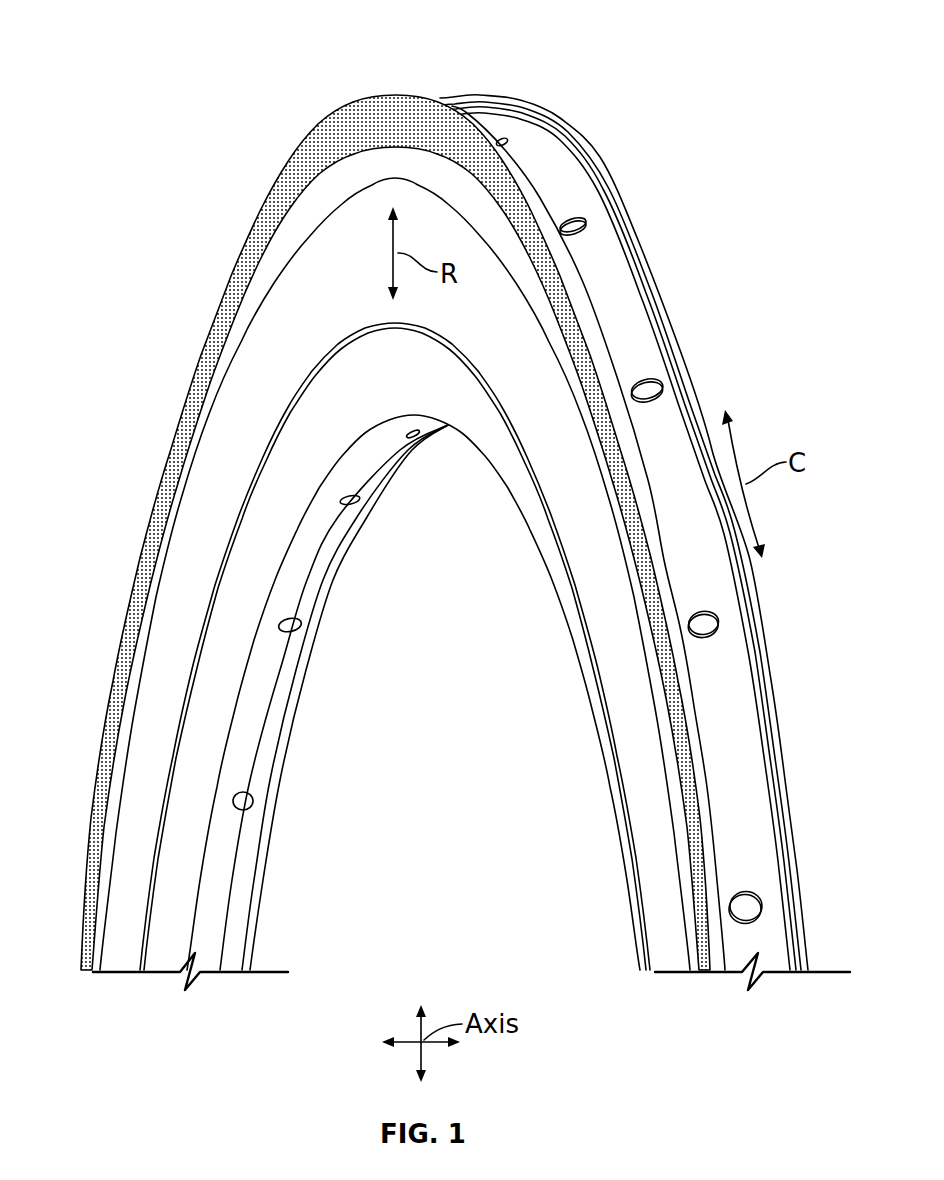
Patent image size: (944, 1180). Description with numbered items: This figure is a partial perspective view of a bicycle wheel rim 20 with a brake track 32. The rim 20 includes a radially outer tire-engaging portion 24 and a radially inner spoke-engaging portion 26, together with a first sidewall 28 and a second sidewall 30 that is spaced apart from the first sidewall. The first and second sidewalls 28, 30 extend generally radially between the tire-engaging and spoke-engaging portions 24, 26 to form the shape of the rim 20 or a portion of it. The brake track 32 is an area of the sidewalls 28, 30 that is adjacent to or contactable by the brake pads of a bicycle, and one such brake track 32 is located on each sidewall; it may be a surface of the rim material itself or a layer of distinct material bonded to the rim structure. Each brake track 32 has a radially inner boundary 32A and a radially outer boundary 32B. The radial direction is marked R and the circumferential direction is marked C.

The wheel rim 20 is at (447, 499).
The radially outer tire-engaging portion 24 is at (455, 88).
The radially inner spoke-engaging portion 26 is at (449, 443).
The first sidewall 28 is at (147, 727).
The second sidewall 30 is at (413, 692).
The brake track 32 is at (313, 162).
The radially inner boundary 32A is at (263, 252).
The radially outer boundary 32B is at (522, 186).